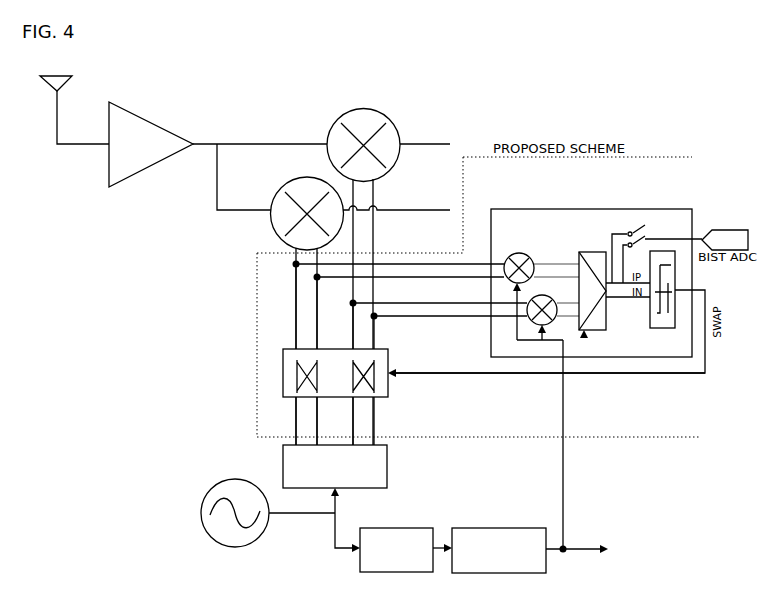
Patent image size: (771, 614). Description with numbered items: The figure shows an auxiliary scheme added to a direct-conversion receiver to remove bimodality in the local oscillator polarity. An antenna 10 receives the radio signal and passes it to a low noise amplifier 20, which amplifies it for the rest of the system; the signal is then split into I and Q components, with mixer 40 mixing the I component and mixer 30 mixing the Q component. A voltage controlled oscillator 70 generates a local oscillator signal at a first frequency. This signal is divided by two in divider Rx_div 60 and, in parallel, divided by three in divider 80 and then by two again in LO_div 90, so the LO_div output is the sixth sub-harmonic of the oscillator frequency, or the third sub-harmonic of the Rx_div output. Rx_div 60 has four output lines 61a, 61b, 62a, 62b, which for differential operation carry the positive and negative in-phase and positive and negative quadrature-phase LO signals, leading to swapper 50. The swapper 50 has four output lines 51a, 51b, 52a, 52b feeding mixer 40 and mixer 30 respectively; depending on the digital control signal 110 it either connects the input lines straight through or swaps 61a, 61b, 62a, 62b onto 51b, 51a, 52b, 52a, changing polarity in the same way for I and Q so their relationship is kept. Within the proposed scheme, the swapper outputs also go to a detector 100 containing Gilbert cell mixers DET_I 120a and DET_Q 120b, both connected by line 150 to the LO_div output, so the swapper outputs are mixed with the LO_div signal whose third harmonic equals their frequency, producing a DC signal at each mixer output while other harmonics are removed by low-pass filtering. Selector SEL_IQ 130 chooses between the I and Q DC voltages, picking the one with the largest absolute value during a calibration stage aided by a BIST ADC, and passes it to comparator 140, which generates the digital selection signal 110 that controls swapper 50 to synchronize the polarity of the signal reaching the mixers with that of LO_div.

The antenna 10 is at (70, 80).
The low noise amplifier (LNA) 20 is at (133, 115).
The mixer 30 is at (380, 108).
The mixer 40 is at (270, 212).
The swapper 50 is at (283, 367).
The swapper output line 51a is at (296, 322).
The swapper output line 51b is at (317, 341).
The swapper output line 52a is at (353, 341).
The swapper output line 52b is at (374, 328).
The divider Rx_div 60 is at (388, 484).
The Rx_div output line 61a is at (296, 412).
The Rx_div output line 61b is at (317, 434).
The Rx_div output line 62a is at (353, 434).
The Rx_div output line 62b is at (374, 412).
The voltage controlled oscillator (VCO) 70 is at (204, 532).
The divider 80 is at (378, 528).
The divider LO_div 90 is at (470, 528).
The detector 100 is at (654, 210).
The digital control signal 110 is at (478, 374).
The Gilbert cell mixer DET_I 120a is at (519, 248).
The Gilbert cell mixer DET_Q 120b is at (544, 290).
The selector SEL_IQ 130 is at (586, 340).
The comparator 140 is at (681, 277).
The line 150 is at (563, 487).